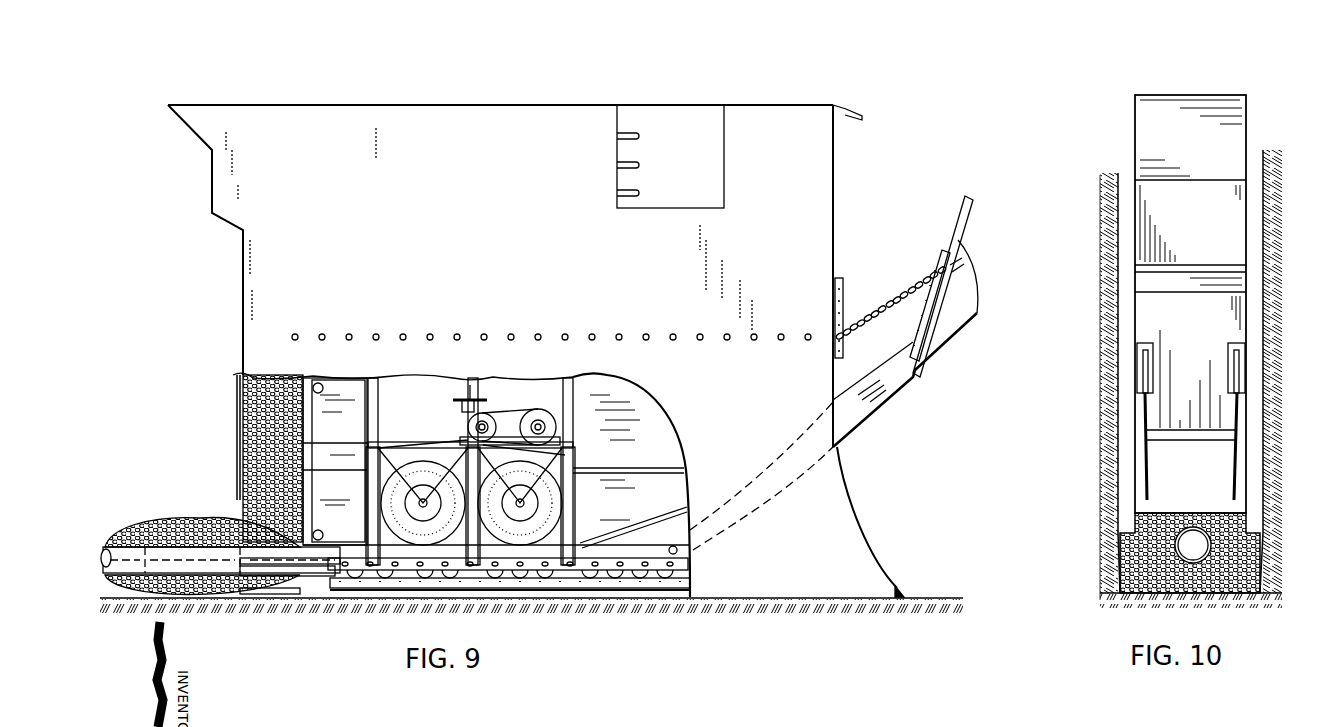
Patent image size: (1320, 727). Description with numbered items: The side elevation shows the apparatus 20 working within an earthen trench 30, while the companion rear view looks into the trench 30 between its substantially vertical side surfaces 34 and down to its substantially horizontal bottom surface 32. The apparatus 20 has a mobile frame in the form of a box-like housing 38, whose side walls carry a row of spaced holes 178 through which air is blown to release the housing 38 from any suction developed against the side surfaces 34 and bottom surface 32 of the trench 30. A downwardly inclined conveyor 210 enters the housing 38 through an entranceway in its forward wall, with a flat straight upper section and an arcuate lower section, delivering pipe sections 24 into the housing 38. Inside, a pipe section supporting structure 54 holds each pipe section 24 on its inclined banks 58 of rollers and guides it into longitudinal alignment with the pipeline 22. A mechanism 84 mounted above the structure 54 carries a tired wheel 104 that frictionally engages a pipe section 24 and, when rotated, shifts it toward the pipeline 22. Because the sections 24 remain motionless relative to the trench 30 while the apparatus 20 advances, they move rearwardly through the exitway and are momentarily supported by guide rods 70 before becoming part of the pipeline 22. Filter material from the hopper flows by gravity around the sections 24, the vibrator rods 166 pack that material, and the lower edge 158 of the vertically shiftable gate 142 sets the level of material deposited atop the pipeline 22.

In FIG. 9, the apparatus 20 is at (475, 97).
In FIG. 9, the housing 38 is at (494, 200).
In FIG. 9, the spaced holes 178 is at (698, 340).
In FIG. 9, the downwardly inclined conveyor 210 is at (892, 406).
In FIG. 9, the bottom surface 32 is at (908, 597).
In FIG. 9, the pipe sections 24 is at (590, 544).
In FIG. 9, the wheel 104 is at (561, 501).
In FIG. 9, the mechanism 84 is at (580, 453).
In FIG. 9, the pipe section supporting structure 54 is at (545, 587).
In FIG. 9, the inclined banks of rollers 58 is at (622, 560).
In FIG. 9, the guide rod 70 is at (260, 570).
In FIG. 9, the pipeline 22 is at (190, 511).
In FIG. 9, the vibrator rods 166 is at (283, 598).
In FIG. 10, the gate 142 is at (1200, 477).
In FIG. 10, the side surfaces 34 is at (1104, 268).
In FIG. 10, the earthen trench 30 is at (1272, 205).
In FIG. 10, the lower edge 158 is at (1195, 514).